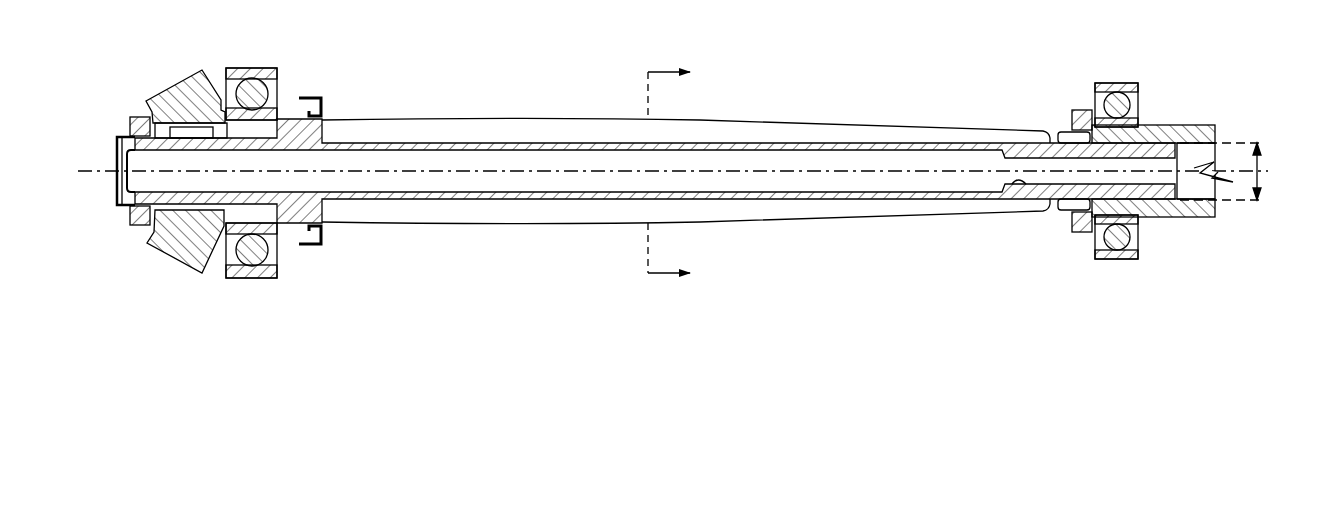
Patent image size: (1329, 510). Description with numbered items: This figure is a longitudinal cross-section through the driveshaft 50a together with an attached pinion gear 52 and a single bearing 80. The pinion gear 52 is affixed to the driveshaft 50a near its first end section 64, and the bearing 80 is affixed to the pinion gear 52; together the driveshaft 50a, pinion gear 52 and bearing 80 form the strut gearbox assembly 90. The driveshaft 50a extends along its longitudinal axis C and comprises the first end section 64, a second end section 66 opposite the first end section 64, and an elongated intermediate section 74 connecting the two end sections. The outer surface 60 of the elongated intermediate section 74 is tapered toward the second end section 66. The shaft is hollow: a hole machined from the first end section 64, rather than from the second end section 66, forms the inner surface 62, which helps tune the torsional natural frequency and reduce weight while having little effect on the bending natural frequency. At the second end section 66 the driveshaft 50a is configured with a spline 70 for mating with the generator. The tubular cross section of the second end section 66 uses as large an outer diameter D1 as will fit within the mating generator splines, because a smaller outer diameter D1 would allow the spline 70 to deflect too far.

The driveshaft 50a is at (473, 79).
The pinion gear 52 is at (176, 263).
The outer surface 60 is at (862, 120).
The inner surface 62 is at (1018, 183).
The first end section 64 is at (112, 201).
The second end section 66 is at (1182, 146).
The spline 70 is at (1141, 201).
The elongated intermediate section 74 is at (741, 103).
The bearing 80 is at (278, 267).
The strut gearbox assembly 90 is at (220, 32).
The longitudinal axis C is at (553, 170).
The outer diameter D1 is at (1258, 167).